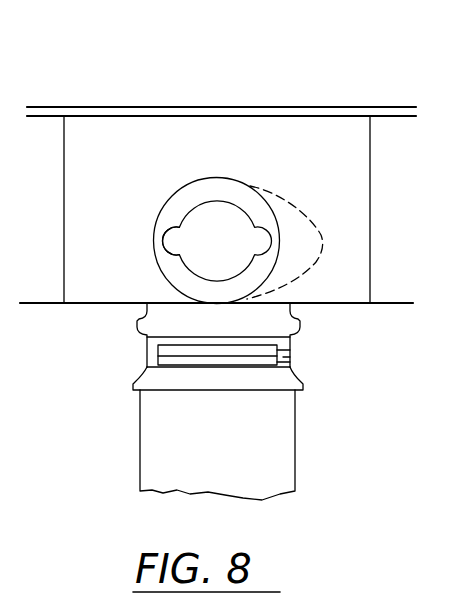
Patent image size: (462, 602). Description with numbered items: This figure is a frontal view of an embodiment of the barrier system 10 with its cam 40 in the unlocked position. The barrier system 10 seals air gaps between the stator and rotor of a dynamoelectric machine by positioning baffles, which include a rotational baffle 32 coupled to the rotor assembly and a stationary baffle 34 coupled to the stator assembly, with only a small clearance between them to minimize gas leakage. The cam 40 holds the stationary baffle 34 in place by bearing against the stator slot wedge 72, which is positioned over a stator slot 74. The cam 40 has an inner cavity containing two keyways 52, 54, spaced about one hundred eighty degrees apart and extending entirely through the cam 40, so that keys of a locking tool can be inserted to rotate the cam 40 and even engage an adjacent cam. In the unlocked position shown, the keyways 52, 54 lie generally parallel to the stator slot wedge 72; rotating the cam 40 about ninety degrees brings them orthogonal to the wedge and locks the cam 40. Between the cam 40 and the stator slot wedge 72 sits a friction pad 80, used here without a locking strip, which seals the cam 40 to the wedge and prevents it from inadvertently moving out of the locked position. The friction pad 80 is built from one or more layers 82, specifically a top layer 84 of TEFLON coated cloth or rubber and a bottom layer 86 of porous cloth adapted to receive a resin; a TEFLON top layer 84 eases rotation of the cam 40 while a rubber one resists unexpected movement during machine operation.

The barrier system 10 is at (161, 98).
The rotational baffle 32 is at (301, 108).
The stationary baffle 34 is at (372, 163).
The cam 40 is at (263, 267).
The keyway 52 is at (270, 239).
The keyway 54 is at (165, 240).
The stator slot wedge 72 is at (132, 381).
The stator slot 74 is at (152, 427).
The friction pad 80 is at (290, 352).
The layer 82 is at (282, 357).
The top layer 84 is at (150, 348).
The bottom layer 86 is at (158, 360).